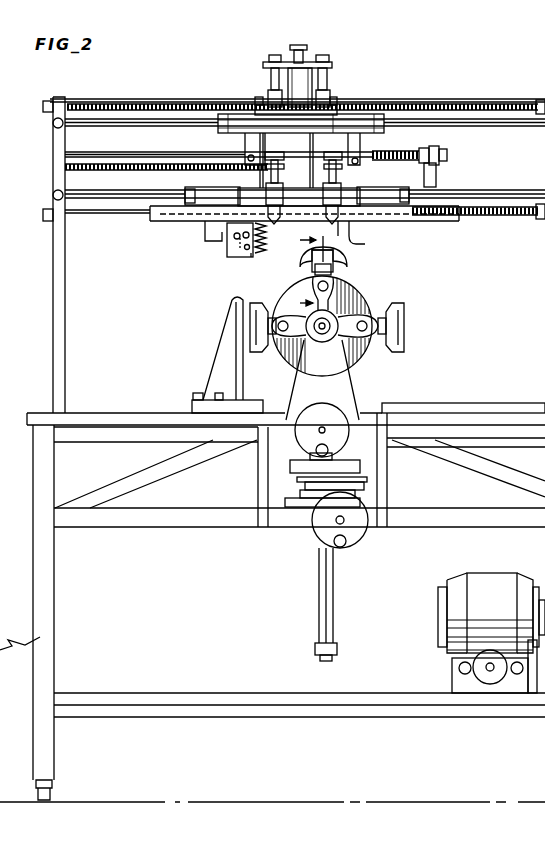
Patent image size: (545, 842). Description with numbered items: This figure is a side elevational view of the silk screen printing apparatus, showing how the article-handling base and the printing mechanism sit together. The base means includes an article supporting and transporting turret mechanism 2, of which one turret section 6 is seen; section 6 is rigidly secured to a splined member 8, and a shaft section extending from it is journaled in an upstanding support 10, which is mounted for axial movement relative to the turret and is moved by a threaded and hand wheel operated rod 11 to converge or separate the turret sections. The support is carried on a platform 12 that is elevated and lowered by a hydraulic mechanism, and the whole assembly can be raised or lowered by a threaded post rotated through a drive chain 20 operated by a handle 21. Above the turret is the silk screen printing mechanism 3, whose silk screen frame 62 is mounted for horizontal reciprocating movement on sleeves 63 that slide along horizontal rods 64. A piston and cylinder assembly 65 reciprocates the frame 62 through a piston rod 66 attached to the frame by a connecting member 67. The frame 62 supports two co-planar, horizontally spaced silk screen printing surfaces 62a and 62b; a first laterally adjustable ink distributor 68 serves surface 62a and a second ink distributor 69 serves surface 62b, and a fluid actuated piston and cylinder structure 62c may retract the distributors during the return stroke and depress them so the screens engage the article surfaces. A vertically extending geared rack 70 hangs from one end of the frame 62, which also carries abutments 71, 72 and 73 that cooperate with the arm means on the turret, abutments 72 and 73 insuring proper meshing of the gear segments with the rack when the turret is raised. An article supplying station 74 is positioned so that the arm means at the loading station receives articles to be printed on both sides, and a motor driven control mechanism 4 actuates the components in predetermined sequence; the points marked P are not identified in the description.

The article supporting and transporting turret mechanism 2 is at (394, 284).
The silk screen printing mechanism 3 is at (371, 97).
The motor driven control mechanism 4 is at (455, 590).
The turret section 6 is at (412, 293).
The splined member 8 is at (298, 306).
The upstanding support 10 is at (330, 390).
The threaded and hand wheel operated rod 11 is at (323, 430).
The platform 12 is at (353, 412).
The drive chain 20 is at (290, 485).
The handle 21 is at (325, 533).
The silk screen frame 62 is at (196, 216).
The first silk screen printing surface 62a is at (232, 241).
The second silk screen printing surface 62b is at (344, 236).
The fluid actuated piston and cylinder structure 62c is at (270, 71).
The sleeve 63 is at (192, 194).
The horizontal rod 64 is at (116, 186).
The piston and cylinder assembly 65 is at (125, 162).
The piston rod 66 is at (375, 153).
The connecting member 67 is at (437, 175).
The first laterally adjustable ink distributor 68 is at (266, 190).
The second laterally adjustable ink distributor 69 is at (340, 192).
The geared rack 70 is at (263, 257).
The abutment 71 is at (240, 252).
The abutment 72 is at (309, 261).
The abutment 73 is at (372, 240).
The article supplying station 74 is at (260, 338).
The pivot point P is at (232, 306).